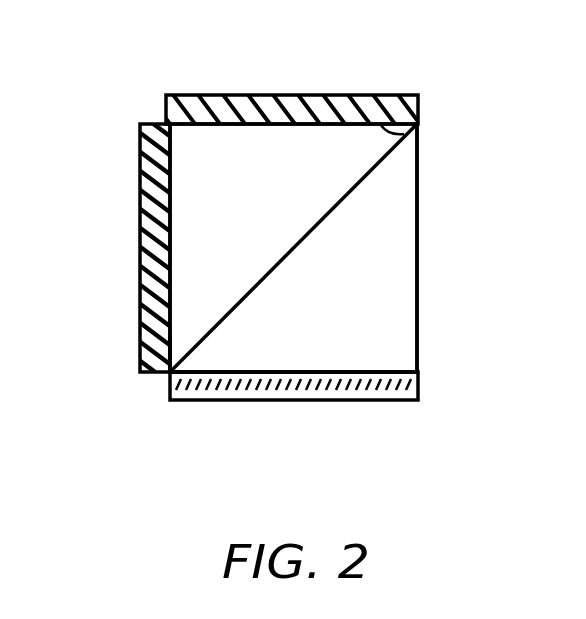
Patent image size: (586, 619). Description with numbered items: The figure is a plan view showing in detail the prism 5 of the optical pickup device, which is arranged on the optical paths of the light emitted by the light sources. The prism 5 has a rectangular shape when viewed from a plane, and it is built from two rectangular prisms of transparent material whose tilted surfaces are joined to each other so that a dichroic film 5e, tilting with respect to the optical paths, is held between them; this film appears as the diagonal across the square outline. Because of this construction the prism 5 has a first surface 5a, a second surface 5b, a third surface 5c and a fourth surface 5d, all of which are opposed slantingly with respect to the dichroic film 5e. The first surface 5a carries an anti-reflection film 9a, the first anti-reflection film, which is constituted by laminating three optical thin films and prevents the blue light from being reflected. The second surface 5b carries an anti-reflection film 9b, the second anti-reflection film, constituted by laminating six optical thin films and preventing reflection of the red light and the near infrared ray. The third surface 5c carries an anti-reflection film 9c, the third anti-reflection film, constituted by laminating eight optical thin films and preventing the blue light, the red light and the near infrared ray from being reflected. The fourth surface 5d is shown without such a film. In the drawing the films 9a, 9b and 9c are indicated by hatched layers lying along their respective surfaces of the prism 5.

The prism 5 is at (195, 137).
The first surface 5a is at (170, 333).
The second surface 5b is at (372, 372).
The third surface 5c is at (383, 125).
The fourth surface 5d is at (420, 271).
The dichroic film 5e is at (322, 216).
The anti-reflection film 9a is at (140, 272).
The anti-reflection film 9b is at (348, 398).
The anti-reflection film 9c is at (375, 95).